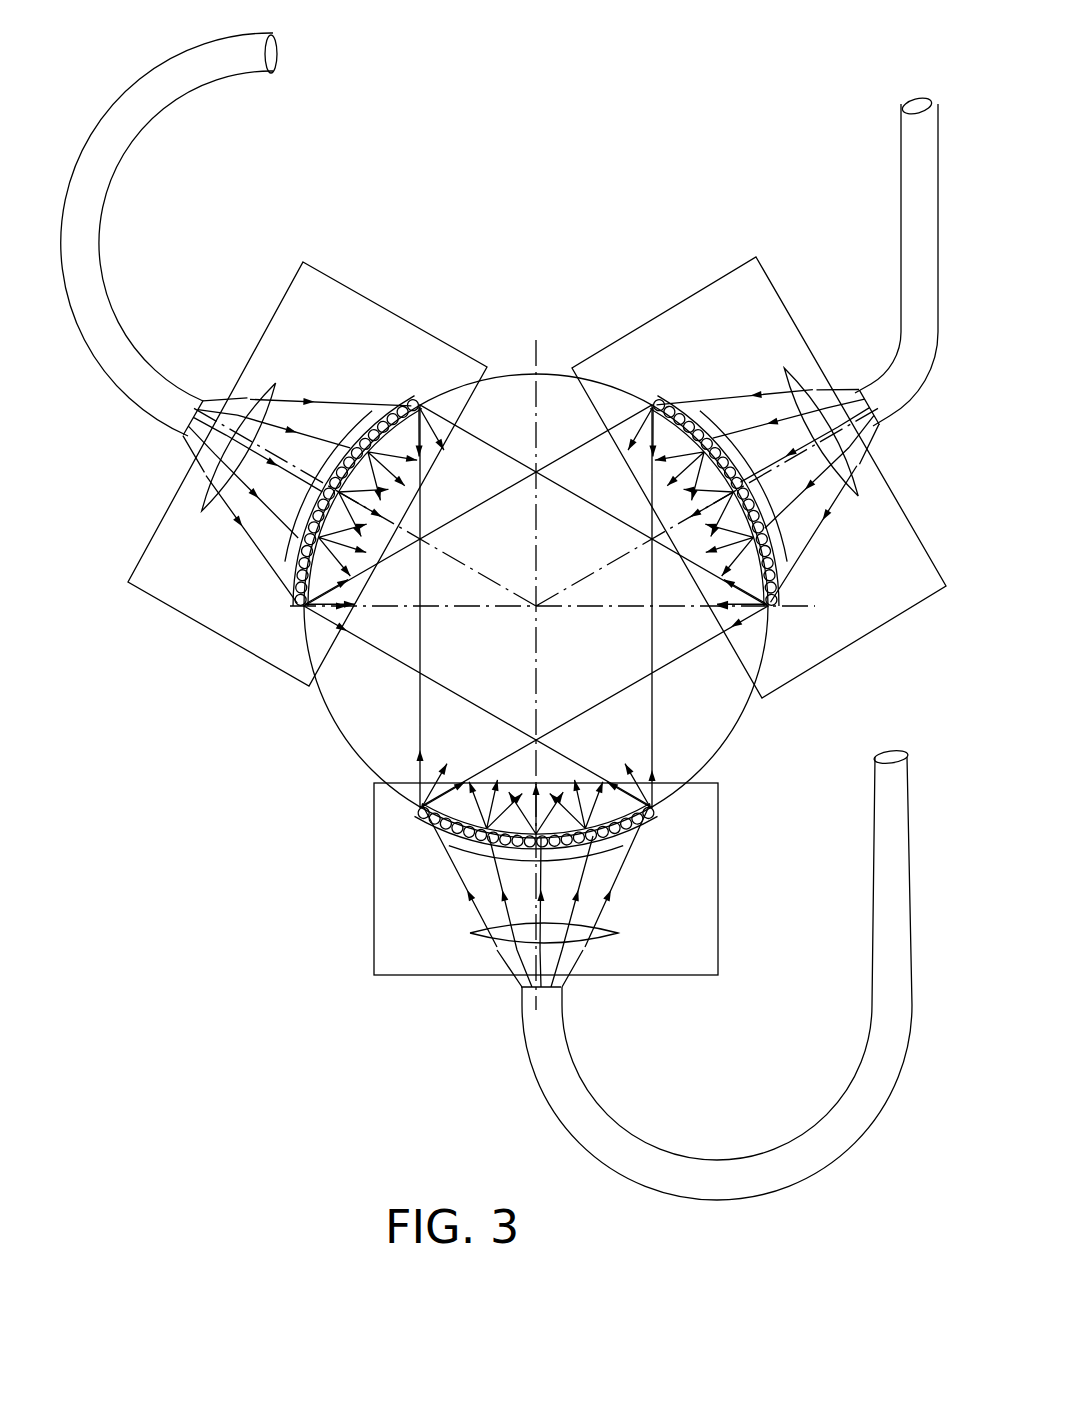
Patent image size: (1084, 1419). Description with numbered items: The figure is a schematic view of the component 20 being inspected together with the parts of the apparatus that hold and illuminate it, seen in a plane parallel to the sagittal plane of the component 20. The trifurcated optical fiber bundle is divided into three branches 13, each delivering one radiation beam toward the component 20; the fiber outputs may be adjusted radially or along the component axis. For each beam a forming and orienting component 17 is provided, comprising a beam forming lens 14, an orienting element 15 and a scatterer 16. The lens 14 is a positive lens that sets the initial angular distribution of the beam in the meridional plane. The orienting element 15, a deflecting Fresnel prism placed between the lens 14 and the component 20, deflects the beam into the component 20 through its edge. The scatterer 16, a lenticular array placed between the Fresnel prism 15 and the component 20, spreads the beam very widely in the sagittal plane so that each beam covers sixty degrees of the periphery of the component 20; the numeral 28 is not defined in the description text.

The branch 13 is at (114, 321).
The beam forming lens 14 is at (542, 932).
The orienting element 15 is at (445, 837).
The scatterer 16 is at (425, 810).
The forming and orienting component 17 is at (373, 893).
The component 20 is at (718, 735).
The optical axis 28 is at (490, 450).